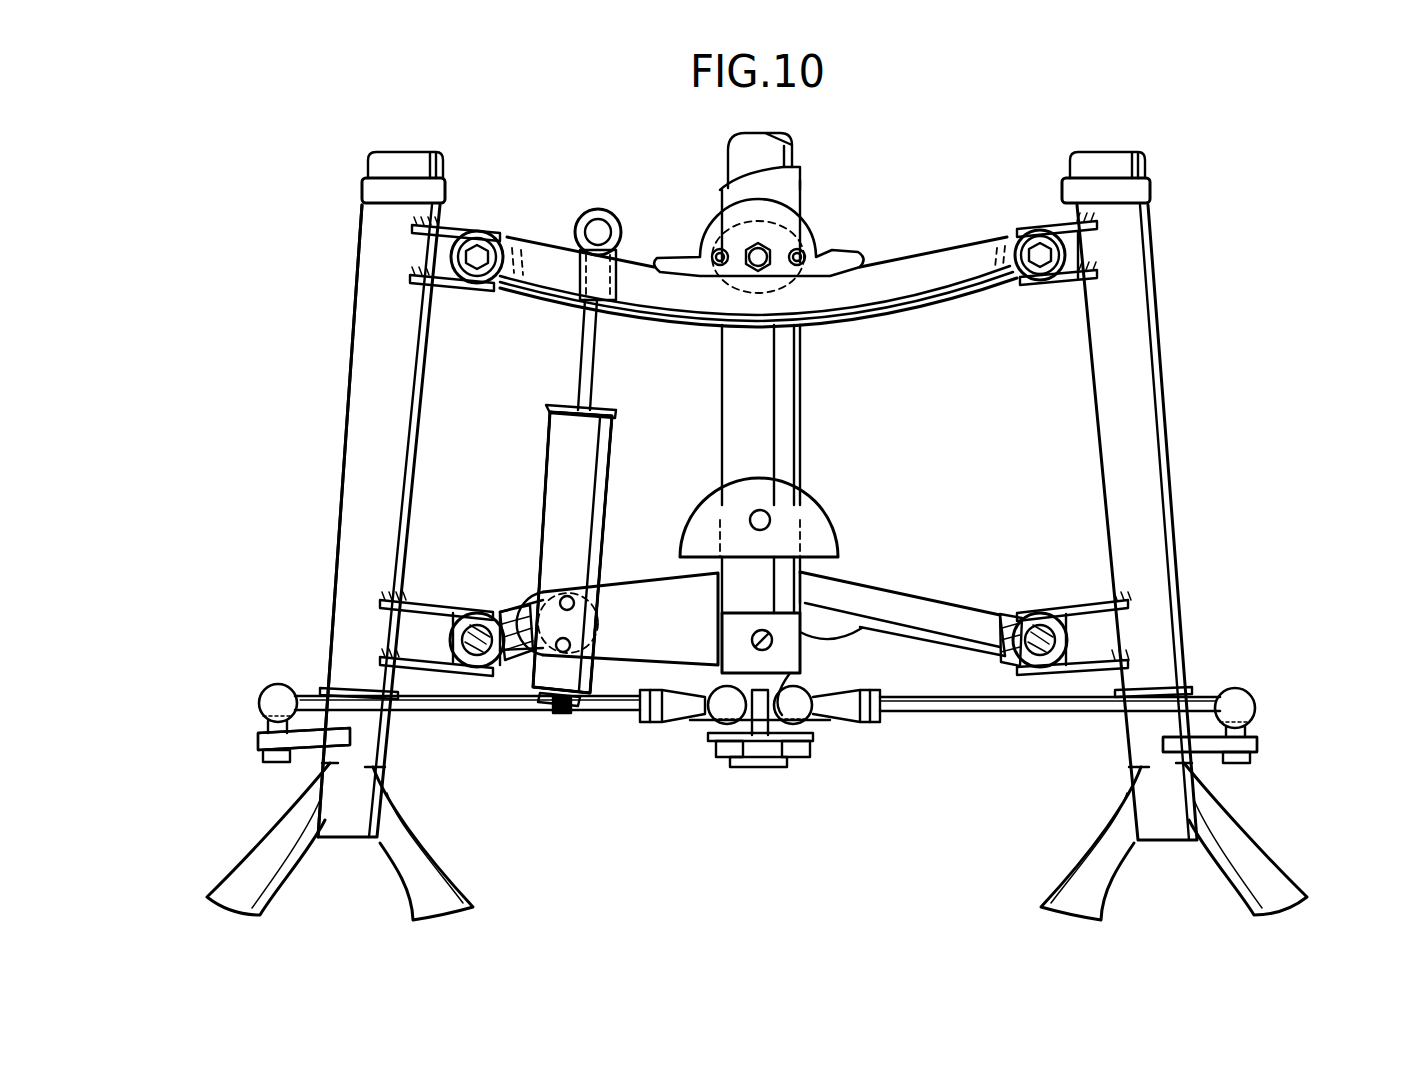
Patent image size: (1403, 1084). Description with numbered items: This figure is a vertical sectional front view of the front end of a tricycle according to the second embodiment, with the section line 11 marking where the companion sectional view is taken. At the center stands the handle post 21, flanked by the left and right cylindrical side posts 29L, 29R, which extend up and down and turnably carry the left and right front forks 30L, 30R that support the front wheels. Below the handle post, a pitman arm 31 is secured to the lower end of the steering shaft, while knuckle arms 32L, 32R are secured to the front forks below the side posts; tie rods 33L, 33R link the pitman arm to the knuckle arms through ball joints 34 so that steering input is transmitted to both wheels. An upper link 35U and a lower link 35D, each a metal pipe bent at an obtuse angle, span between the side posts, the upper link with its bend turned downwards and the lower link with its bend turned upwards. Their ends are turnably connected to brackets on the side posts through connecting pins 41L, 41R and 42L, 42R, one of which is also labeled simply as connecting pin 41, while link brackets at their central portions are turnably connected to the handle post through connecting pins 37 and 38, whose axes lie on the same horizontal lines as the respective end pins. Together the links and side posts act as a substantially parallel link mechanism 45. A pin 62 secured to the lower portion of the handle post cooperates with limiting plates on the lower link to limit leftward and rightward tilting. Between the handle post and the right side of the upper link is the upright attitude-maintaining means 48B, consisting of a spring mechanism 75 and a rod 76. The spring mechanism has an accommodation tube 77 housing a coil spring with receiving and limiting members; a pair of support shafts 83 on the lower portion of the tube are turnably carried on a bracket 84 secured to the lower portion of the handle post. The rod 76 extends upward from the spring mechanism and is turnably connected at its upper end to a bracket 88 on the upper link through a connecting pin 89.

The section line 11 is at (608, 120).
The handle post 21 is at (790, 458).
The right side post 29R is at (355, 440).
The left side post 29L is at (1138, 396).
The right front fork 30R is at (232, 860).
The left front fork 30L is at (1248, 836).
The pitman arm 31 is at (760, 738).
The right knuckle arm 32R is at (312, 740).
The left knuckle arm 32L is at (1196, 750).
The tie rod 33R is at (487, 700).
The tie rod 33L is at (1012, 703).
The ball joint 34 is at (268, 710).
The upper link 35U is at (873, 284).
The lower link 35D is at (900, 603).
The connecting pin 37 is at (712, 257).
The connecting pin 38 is at (773, 638).
The arm bracket 41 is at (760, 708).
The connecting pin 41R is at (477, 272).
The connecting pin 41L is at (1028, 283).
The connecting pin 42R is at (477, 628).
The connecting pin 42L is at (1045, 668).
The parallel link mechanism 45 is at (336, 354).
The upright attitude-maintaining means 48B is at (535, 444).
The pin 62 is at (760, 510).
The spring mechanism 75 is at (624, 513).
The rod 76 is at (587, 372).
The accommodation tube 77 is at (552, 492).
The support shaft 83 is at (563, 594).
The bracket 84 is at (642, 600).
The bracket 88 is at (626, 232).
The connecting pin 89 is at (589, 220).